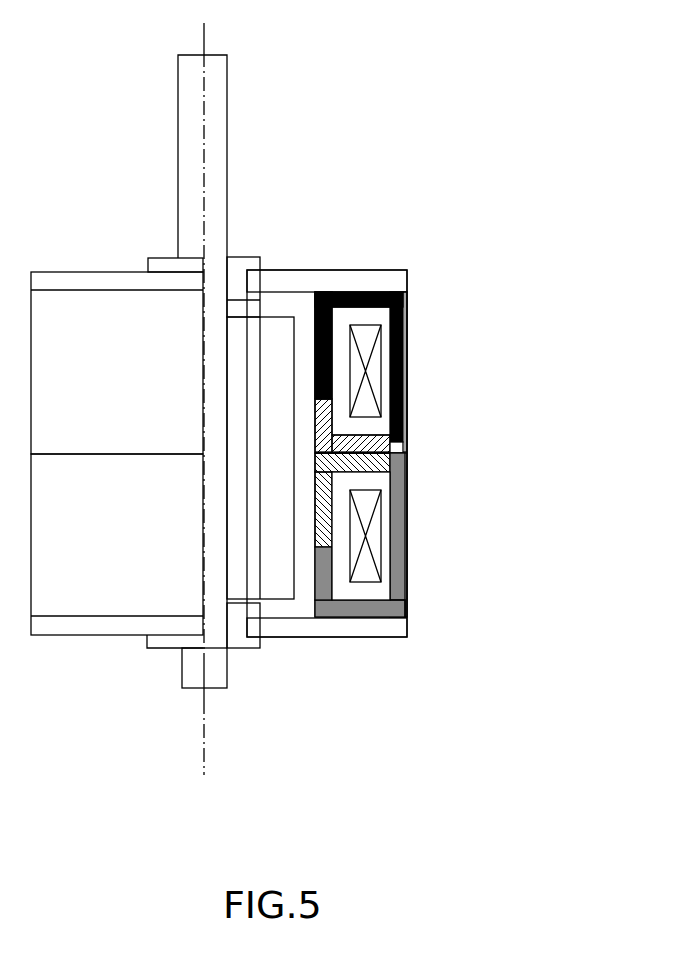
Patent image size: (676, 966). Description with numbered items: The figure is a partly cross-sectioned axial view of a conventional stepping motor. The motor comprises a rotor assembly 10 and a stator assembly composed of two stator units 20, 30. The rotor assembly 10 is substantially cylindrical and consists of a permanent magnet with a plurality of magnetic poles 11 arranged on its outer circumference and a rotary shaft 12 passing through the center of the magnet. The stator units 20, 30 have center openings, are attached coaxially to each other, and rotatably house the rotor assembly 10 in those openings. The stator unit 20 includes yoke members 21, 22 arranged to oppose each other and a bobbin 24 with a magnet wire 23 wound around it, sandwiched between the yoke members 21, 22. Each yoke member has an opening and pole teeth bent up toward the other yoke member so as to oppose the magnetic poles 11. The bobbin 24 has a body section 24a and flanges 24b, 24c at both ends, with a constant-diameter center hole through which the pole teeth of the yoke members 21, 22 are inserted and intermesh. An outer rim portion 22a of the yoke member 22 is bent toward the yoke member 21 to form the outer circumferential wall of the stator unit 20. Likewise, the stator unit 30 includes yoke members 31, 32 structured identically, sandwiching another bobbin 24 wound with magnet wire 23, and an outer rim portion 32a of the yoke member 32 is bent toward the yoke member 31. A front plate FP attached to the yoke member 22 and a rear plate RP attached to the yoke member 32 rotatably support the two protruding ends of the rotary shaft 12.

The rotor assembly 10 is at (260, 307).
The magnetic poles 11 is at (297, 582).
The rotary shaft 12 is at (230, 132).
The stator unit 20 is at (420, 372).
The yoke member 21 is at (405, 443).
The yoke member 22 is at (408, 292).
The outer rim portion 22a is at (407, 335).
The magnet wire 23 is at (392, 395).
The bobbin 24 is at (322, 375).
The body section 24a is at (315, 407).
The flange 24b is at (358, 300).
The flange 24c is at (313, 455).
The stator unit 30 is at (422, 542).
The yoke member 31 is at (313, 525).
The yoke member 32 is at (393, 620).
The outer rim portion 32a is at (407, 597).
The front plate FP is at (90, 270).
The rear plate RP is at (102, 637).